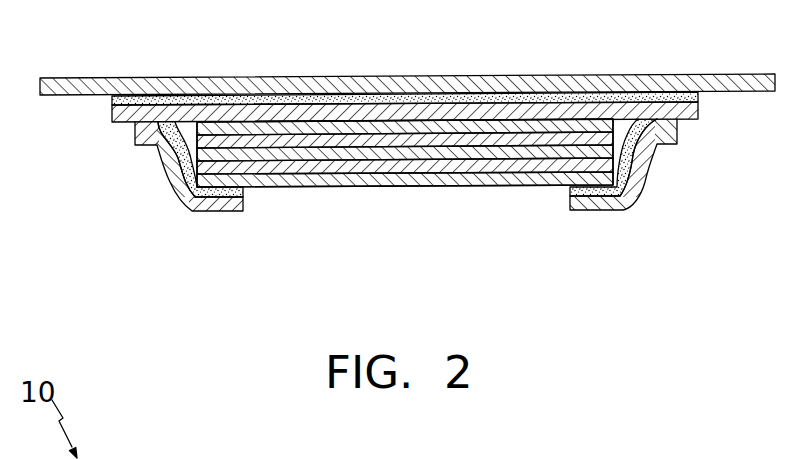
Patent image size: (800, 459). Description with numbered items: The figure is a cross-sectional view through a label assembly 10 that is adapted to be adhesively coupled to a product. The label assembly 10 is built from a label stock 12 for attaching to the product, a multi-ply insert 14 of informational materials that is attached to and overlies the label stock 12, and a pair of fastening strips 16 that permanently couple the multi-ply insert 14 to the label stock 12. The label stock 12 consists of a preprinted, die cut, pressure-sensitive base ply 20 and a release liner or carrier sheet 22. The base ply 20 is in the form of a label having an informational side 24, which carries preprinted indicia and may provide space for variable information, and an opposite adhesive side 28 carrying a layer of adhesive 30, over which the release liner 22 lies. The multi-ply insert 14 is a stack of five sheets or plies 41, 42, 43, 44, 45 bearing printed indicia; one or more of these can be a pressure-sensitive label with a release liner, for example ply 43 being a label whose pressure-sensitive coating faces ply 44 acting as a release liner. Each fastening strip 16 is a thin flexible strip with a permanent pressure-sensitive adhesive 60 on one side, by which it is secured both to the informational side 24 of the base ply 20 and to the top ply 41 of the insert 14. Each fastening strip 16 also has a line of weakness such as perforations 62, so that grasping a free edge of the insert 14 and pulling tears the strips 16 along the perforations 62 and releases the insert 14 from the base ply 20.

The label assembly 10 is at (233, 66).
The label stock 12 is at (92, 111).
The multi-ply insert 14 is at (405, 206).
The fastening strips 16 is at (185, 222).
The base ply 20 is at (113, 110).
The release liner 22 is at (107, 78).
The informational side 24 is at (690, 119).
The adhesive side 28 is at (675, 92).
The layer of adhesive 30 is at (700, 96).
The top ply 41 is at (335, 186).
The ply 42 is at (379, 168).
The ply 43 is at (449, 149).
The ply 44 is at (472, 138).
The ply 45 is at (517, 123).
The pressure-sensitive adhesive 60 is at (243, 197).
The perforations 62 is at (206, 209).